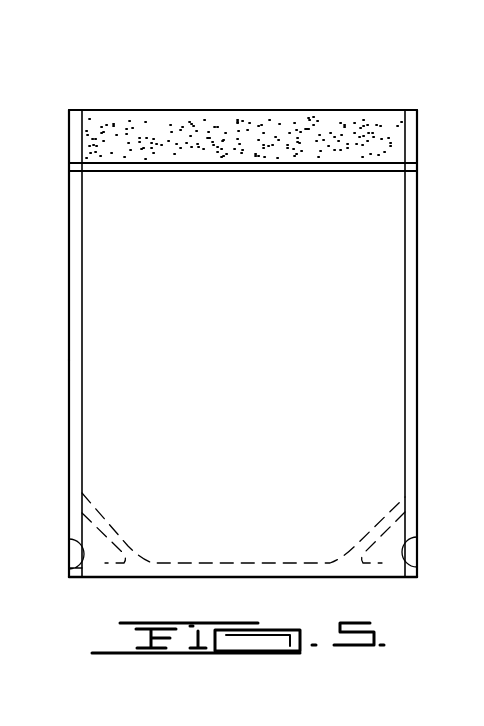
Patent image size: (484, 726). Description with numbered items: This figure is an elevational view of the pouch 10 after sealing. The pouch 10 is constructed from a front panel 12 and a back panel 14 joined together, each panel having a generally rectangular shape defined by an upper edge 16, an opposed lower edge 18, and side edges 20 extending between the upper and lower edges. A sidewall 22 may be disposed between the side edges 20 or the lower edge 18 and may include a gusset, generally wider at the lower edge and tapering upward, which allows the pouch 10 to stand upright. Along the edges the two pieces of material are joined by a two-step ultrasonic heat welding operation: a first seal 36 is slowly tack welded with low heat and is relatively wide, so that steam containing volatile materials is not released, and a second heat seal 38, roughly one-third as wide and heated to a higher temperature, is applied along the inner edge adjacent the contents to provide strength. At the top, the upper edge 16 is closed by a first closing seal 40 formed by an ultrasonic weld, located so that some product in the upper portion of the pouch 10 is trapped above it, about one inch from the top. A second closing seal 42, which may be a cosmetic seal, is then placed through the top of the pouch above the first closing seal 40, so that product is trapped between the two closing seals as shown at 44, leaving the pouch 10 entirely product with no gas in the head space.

The pouch 10 is at (326, 82).
The front panel 12 is at (117, 252).
The back panel 14 is at (68, 310).
The upper edge 16 is at (102, 110).
The lower edge 18 is at (172, 578).
The side edges 20 is at (408, 305).
The sidewall 22 is at (365, 567).
The first seal 36 is at (68, 400).
The second heat seal 38 is at (80, 452).
The first closing seal 40 is at (217, 170).
The second closing seal 42 is at (167, 110).
The trapped product 44 is at (237, 133).